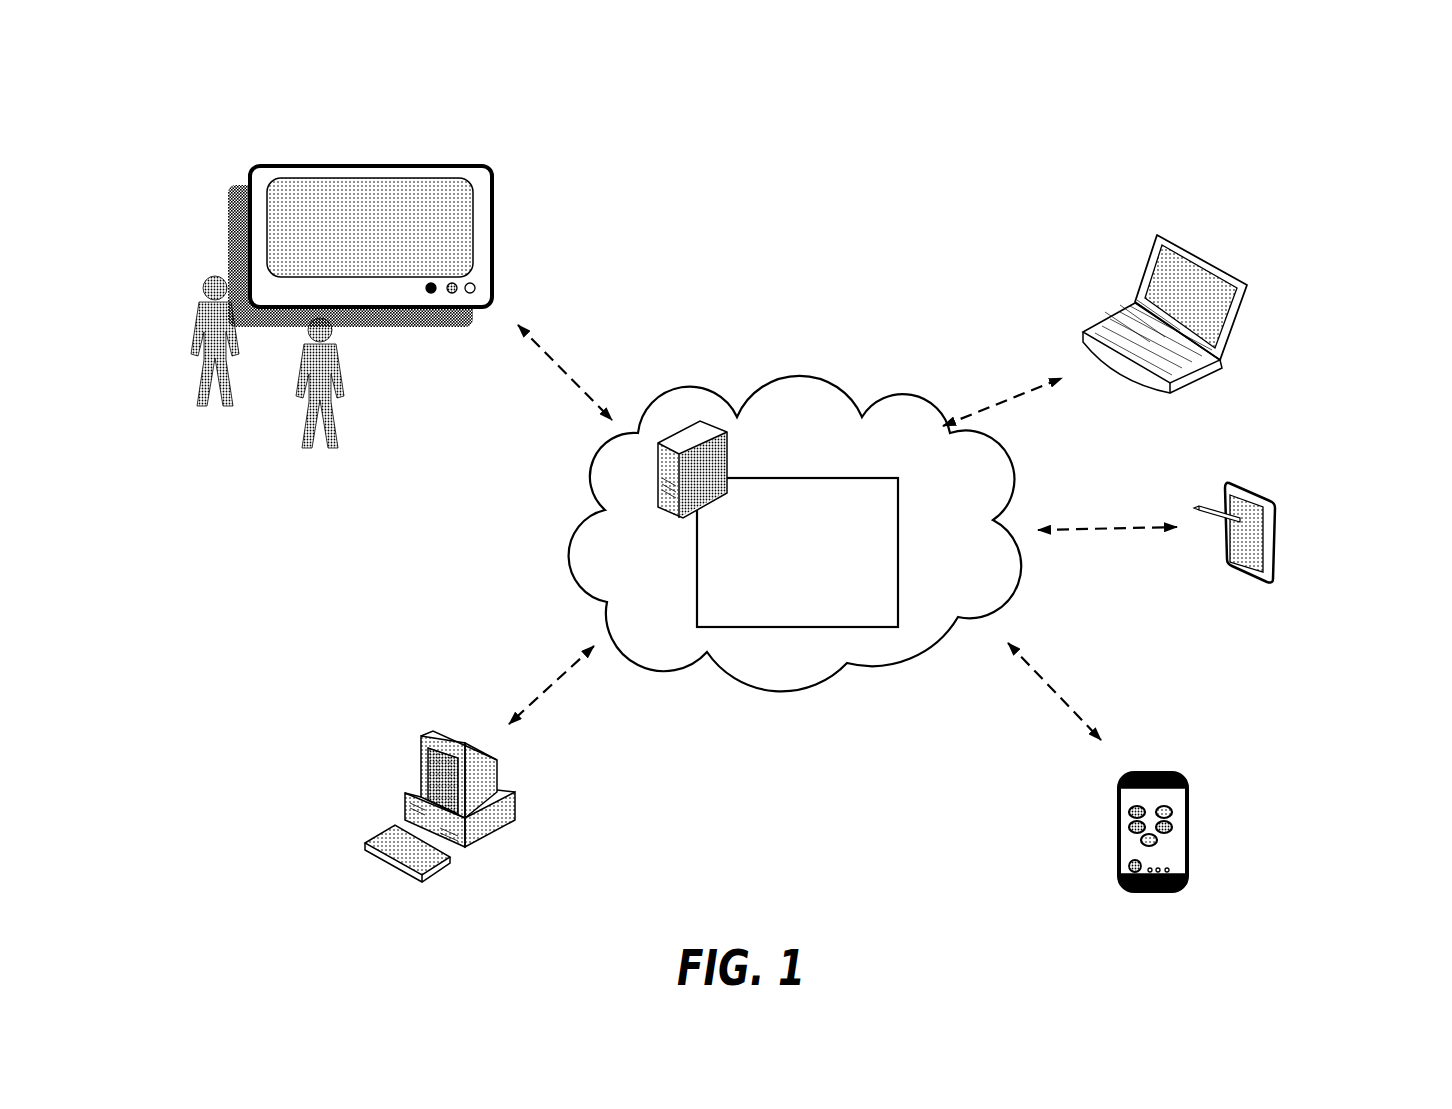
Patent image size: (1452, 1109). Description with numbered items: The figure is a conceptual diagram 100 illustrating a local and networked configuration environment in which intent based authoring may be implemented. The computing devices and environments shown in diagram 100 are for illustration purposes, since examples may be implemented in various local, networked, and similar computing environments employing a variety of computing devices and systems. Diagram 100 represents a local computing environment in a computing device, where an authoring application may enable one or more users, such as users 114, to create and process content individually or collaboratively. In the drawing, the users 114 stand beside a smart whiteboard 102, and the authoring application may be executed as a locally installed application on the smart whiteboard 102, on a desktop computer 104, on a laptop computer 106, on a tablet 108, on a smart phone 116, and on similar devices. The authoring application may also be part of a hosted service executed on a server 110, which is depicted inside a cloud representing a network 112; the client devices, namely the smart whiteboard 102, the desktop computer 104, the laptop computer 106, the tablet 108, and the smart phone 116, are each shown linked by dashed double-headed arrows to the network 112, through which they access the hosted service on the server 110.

The diagram 100 is at (1317, 100).
The smart whiteboard 102 is at (406, 142).
The desktop computer 104 is at (377, 718).
The laptop computer 106 is at (1200, 200).
The tablet 108 is at (1301, 512).
The server 110 is at (733, 453).
The network 112 is at (793, 373).
The users 114 is at (267, 437).
The smart phone 116 is at (1134, 896).